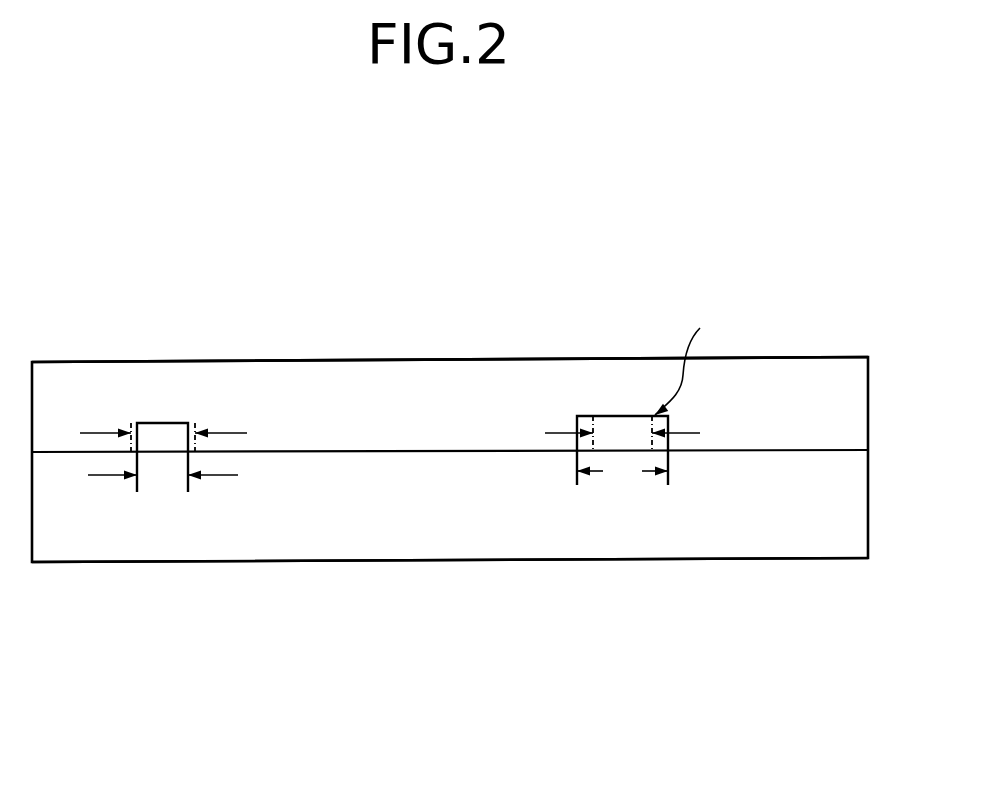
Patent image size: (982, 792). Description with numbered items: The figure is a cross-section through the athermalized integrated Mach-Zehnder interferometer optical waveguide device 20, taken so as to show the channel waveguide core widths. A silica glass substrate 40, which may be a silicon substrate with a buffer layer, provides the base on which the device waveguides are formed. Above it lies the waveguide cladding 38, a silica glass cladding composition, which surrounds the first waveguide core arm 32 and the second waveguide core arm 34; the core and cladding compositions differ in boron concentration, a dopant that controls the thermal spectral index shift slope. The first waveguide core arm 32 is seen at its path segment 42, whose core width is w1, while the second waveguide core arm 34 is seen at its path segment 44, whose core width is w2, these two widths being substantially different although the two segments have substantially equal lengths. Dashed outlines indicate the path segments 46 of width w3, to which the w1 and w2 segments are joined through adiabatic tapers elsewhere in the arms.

The athermalized integrated optical waveguide device 20 is at (200, 218).
The first waveguide core arm 32 is at (712, 498).
The second waveguide core arm 34 is at (128, 533).
The waveguide cladding 38 is at (462, 357).
The silica glass substrate 40 is at (352, 562).
The path segment 42 is at (618, 415).
The path segment 44 is at (163, 420).
The path segments 46 is at (130, 422).